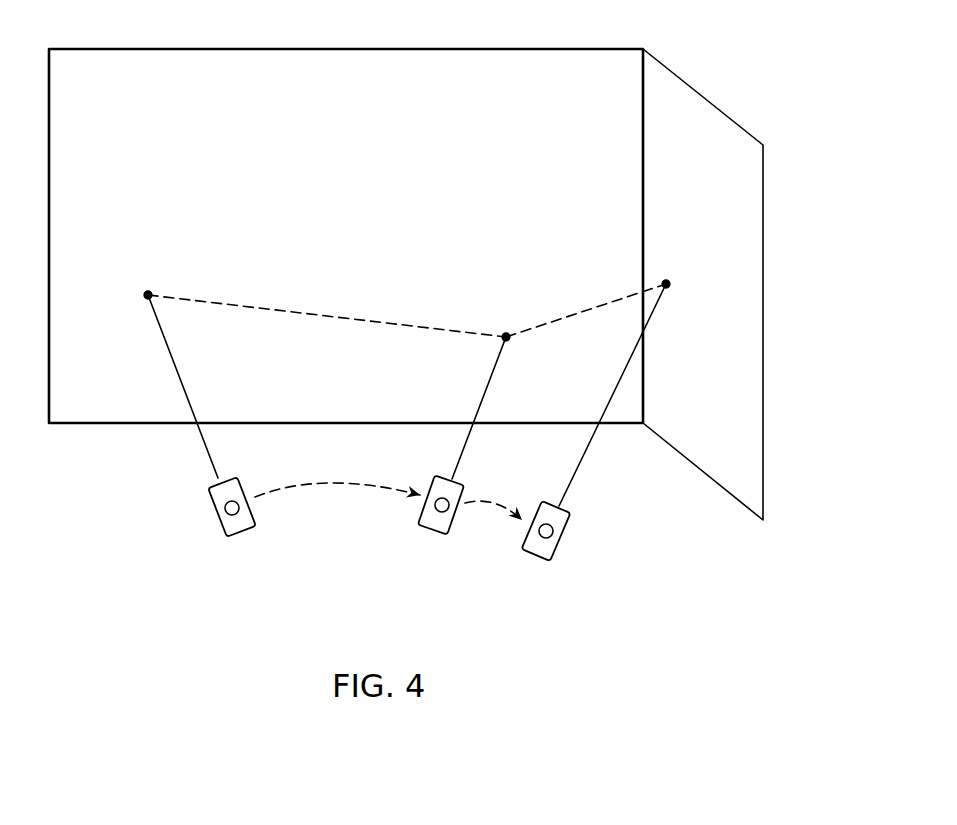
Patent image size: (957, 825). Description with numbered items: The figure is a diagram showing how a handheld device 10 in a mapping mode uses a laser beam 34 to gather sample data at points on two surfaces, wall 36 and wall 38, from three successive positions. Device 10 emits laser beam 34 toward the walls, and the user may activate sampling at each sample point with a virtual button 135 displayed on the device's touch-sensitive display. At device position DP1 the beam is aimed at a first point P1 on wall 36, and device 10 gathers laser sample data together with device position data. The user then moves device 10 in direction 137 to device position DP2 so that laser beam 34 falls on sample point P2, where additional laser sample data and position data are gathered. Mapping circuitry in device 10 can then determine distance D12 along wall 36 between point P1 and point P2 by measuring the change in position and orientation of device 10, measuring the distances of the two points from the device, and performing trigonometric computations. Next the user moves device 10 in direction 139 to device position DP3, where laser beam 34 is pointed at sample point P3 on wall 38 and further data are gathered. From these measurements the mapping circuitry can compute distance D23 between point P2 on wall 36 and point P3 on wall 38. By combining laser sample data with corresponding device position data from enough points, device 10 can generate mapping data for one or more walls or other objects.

The wall 36 is at (352, 66).
The wall 38 is at (746, 147).
The laser beam 34 is at (178, 366).
The device 10 is at (222, 528).
The virtual button 135 is at (223, 510).
The direction 137 is at (310, 483).
The direction 139 is at (487, 500).
The point P1 is at (150, 285).
The sample point P2 is at (507, 328).
The sample point P3 is at (668, 275).
The distance D12 is at (288, 312).
The distance D23 is at (596, 305).
The device position DP1 is at (243, 540).
The device position DP2 is at (453, 510).
The device position DP3 is at (568, 540).